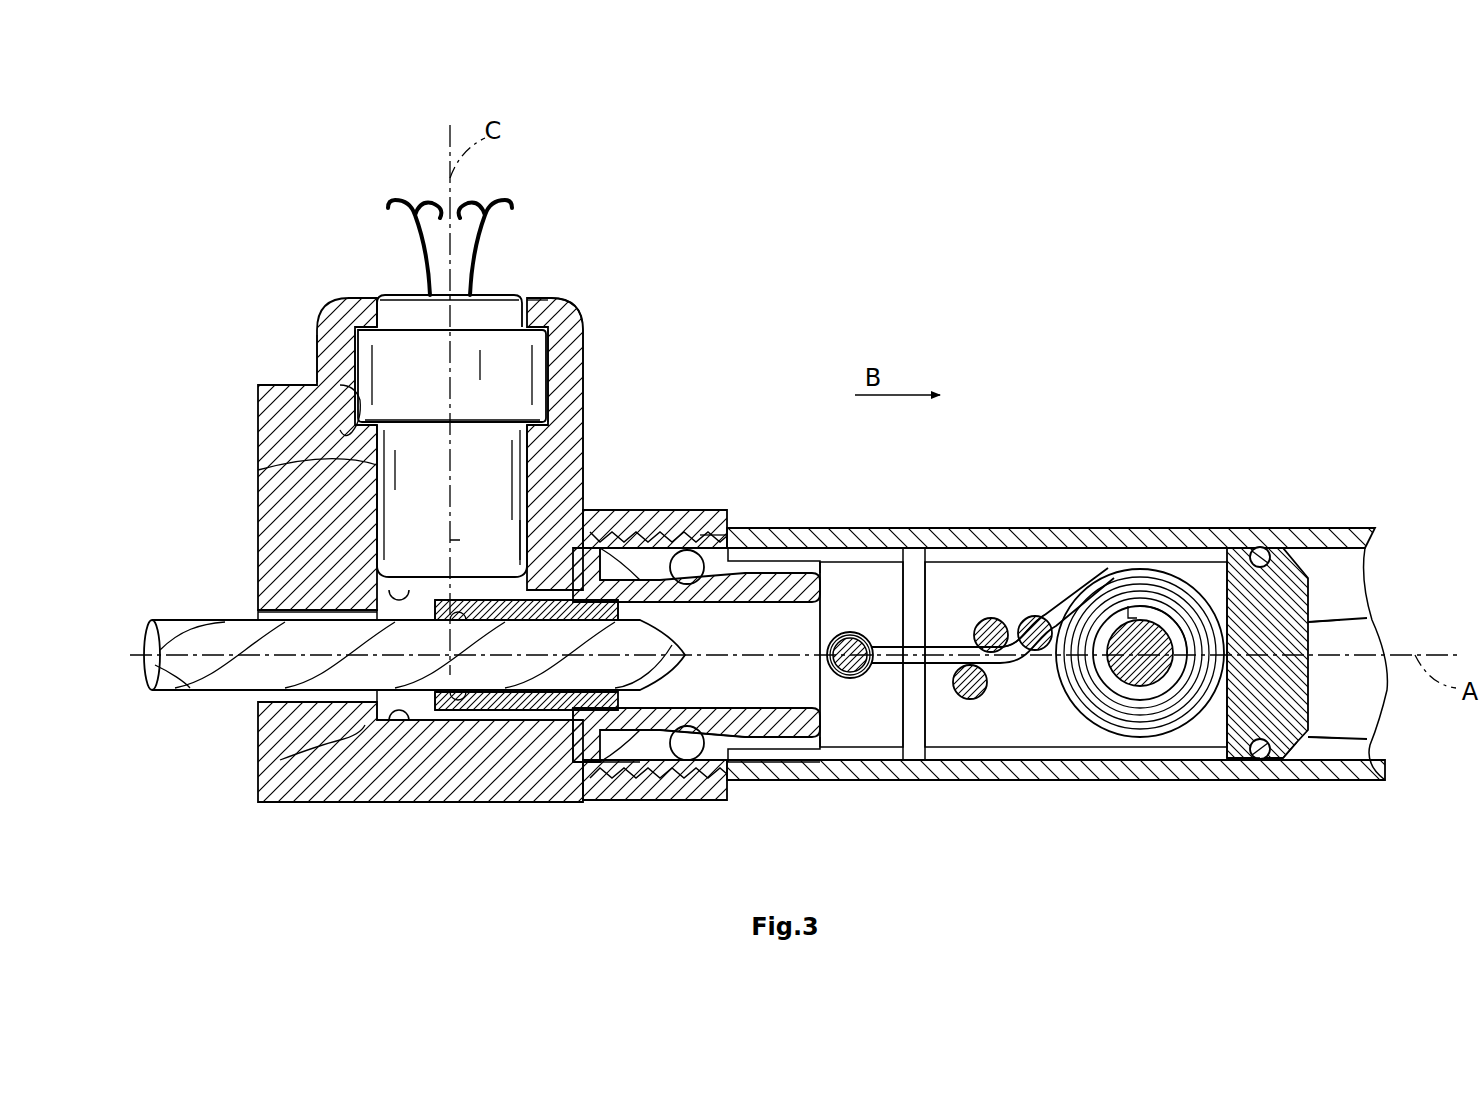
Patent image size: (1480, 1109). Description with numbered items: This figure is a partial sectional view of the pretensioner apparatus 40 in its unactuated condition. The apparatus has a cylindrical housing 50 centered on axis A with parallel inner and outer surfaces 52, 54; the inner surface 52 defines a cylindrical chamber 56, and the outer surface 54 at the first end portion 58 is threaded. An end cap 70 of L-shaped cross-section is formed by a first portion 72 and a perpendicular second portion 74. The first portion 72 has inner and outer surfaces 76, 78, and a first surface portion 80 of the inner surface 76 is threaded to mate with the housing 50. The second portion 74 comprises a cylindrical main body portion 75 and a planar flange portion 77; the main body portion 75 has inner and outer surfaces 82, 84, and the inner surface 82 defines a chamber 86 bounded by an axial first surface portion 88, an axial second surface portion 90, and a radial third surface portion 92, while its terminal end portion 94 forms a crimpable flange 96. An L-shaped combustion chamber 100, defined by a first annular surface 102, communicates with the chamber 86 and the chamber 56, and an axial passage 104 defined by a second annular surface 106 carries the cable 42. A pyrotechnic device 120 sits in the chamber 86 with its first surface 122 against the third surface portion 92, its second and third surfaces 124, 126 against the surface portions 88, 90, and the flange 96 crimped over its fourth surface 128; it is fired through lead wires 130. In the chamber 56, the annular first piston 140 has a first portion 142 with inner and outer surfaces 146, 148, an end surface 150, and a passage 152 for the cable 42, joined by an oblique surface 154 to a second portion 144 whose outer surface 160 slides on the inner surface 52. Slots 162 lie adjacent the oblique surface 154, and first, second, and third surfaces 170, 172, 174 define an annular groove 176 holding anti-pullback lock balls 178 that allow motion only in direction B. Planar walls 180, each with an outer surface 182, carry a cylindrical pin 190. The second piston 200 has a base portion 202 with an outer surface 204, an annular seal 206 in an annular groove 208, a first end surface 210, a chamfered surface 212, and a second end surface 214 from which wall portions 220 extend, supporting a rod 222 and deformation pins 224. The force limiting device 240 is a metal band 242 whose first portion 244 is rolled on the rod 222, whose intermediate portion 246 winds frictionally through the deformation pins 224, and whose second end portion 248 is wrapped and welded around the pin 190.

The pretensioner apparatus 40 is at (955, 468).
The cable 42 is at (200, 698).
The housing 50 is at (1010, 526).
The inner surface 52 is at (1350, 548).
The outer surface 54 is at (1335, 528).
The chamber 56 is at (1337, 678).
The first end portion 58 is at (608, 772).
The end cap 70 is at (590, 385).
The first portion 72 is at (668, 545).
The second portion 74 is at (575, 345).
The main body portion 75 is at (600, 305).
The inner surface 76 is at (695, 542).
The flange portion 77 is at (258, 437).
The outer surface 78 is at (660, 520).
The first surface portion 80 is at (735, 560).
The inner surface 82 is at (527, 552).
The outer surface 84 is at (585, 368).
The chamber 86 is at (425, 590).
The first surface portion 88 is at (380, 498).
The second surface portion 90 is at (358, 363).
The third surface portion 92 is at (350, 430).
The terminal end portion 94 is at (370, 294).
The crimpable flange 96 is at (553, 306).
The combustion chamber 100 is at (405, 610).
The first annular surface 102 is at (393, 707).
The axial passage 104 is at (275, 615).
The second annular surface 106 is at (260, 696).
The pyrotechnic device 120 is at (512, 288).
The first surface 122 is at (355, 437).
The second surface 124 is at (375, 478).
The third surface 126 is at (350, 345).
The fourth surface 128 is at (368, 322).
The lead wires 130 is at (470, 250).
The first piston 140 is at (582, 722).
The first portion 142 is at (575, 548).
The second portion 144 is at (757, 556).
The inner surface 146 is at (465, 694).
The outer surface 148 is at (460, 712).
The end surface 150 is at (377, 714).
The passage 152 is at (487, 694).
The oblique surface 154 is at (600, 545).
The outer surface 160 is at (622, 540).
The slots 162 is at (640, 792).
The first surface 170 is at (680, 762).
The second surface 172 is at (835, 780).
The third surface 174 is at (770, 740).
The annular groove 176 is at (720, 760).
The anti-pullback lock balls 178 is at (690, 745).
The planar walls 180 is at (875, 585).
The outer surface 182 is at (812, 560).
The pin 190 is at (832, 650).
The second piston 200 is at (1240, 540).
The base portion 202 is at (1262, 757).
The outer surface 204 is at (1235, 762).
The annular seal 206 is at (1268, 760).
The annular groove 208 is at (1262, 548).
The first end surface 210 is at (1312, 622).
The chamfered surface 212 is at (1365, 740).
The second end surface 214 is at (1225, 752).
The wall portions 220 is at (960, 595).
The rod 222 is at (1145, 640).
The deformation pins 224 is at (970, 688).
The force limiting device 240 is at (1075, 715).
The band 242 is at (1172, 595).
The first portion 244 is at (1128, 610).
The intermediate portion 246 is at (1058, 592).
The second end portion 248 is at (845, 672).